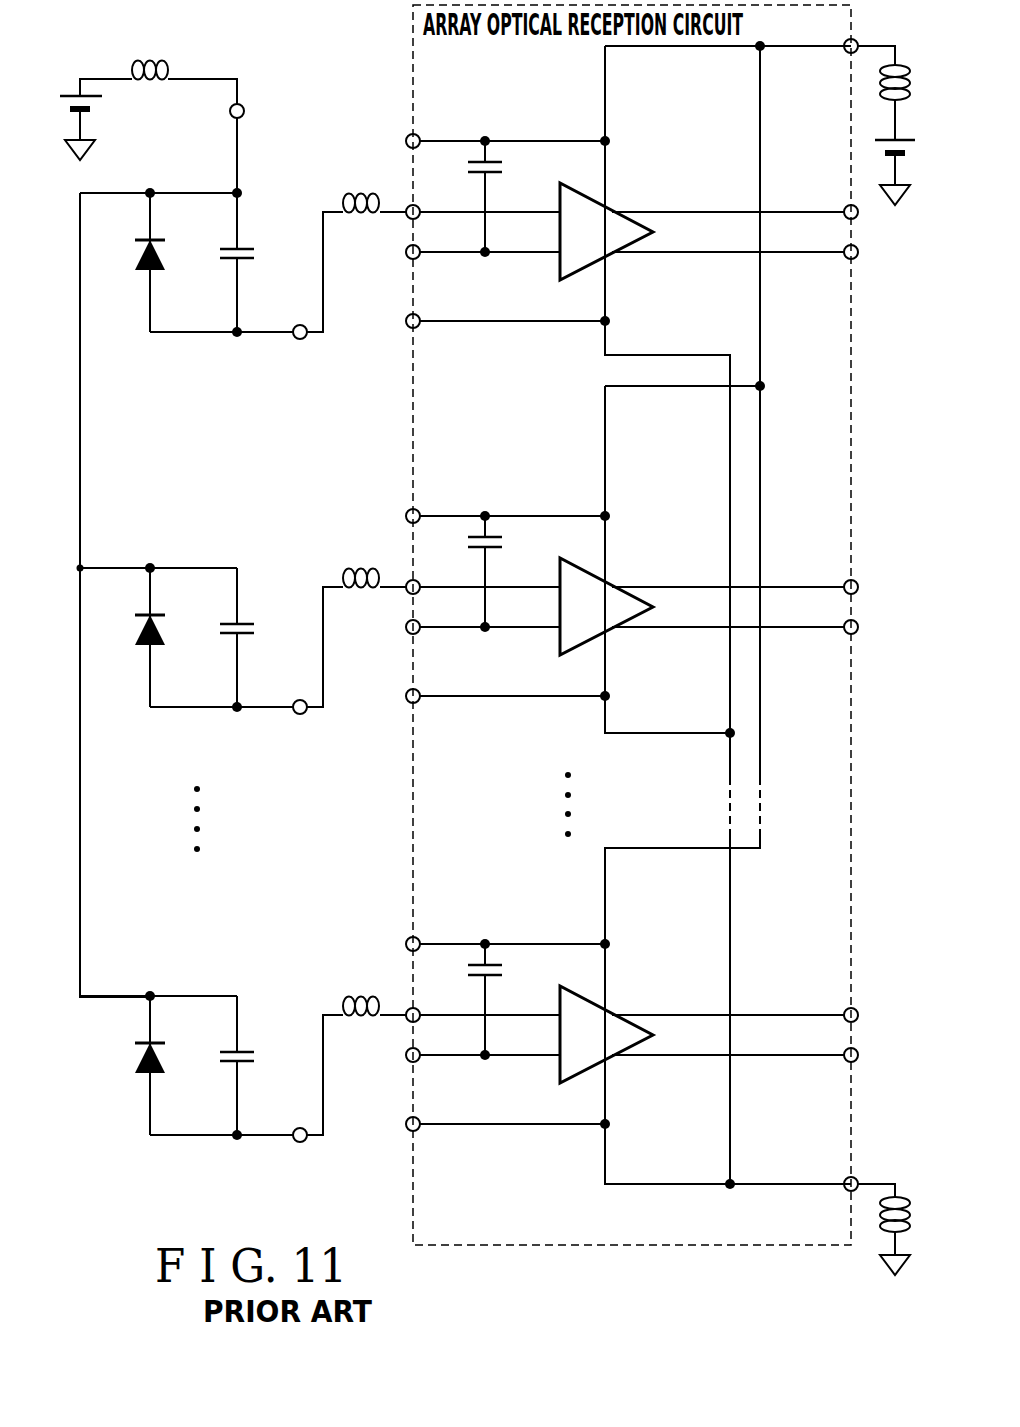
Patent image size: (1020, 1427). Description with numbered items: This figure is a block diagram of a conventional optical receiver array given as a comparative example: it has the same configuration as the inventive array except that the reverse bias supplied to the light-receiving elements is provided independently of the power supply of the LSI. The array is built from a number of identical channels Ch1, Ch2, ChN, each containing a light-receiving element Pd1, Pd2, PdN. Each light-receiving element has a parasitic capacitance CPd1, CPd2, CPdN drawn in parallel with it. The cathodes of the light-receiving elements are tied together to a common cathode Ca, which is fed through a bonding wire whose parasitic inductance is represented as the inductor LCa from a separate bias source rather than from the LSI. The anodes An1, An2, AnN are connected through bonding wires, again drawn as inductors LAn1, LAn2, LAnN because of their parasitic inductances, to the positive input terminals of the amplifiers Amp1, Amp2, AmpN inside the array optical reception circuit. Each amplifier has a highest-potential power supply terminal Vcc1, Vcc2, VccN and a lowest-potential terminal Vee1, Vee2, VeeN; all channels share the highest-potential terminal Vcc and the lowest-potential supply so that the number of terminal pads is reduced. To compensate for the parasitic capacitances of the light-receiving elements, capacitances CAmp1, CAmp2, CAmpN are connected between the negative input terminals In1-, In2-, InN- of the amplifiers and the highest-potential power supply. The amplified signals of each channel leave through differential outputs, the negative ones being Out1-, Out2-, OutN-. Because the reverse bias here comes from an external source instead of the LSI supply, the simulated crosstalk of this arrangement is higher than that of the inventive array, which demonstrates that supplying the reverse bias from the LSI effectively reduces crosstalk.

The channel Ch1 is at (193, 302).
The channel Ch2 is at (193, 679).
The channel ChN is at (193, 1108).
The light-receiving element Pd1 is at (164, 262).
The light-receiving element Pd2 is at (164, 637).
The light-receiving element PdN is at (164, 1065).
The parasitic capacitance CPd1 is at (261, 262).
The parasitic capacitance CPd2 is at (261, 637).
The parasitic capacitance CPdN is at (262, 1065).
The anode An1 is at (281, 318).
The anode An2 is at (281, 693).
The anode AnN is at (280, 1121).
The bonding wire inductance LAn1 is at (356, 263).
The bonding wire inductance LAn2 is at (356, 638).
The bonding wire inductance LAnN is at (356, 1066).
The cathode Ca is at (220, 136).
The bonding wire inductance LCa is at (150, 96).
The highest-potential power supply terminal Vcc is at (760, 107).
The highest-potential power supply terminal Vcc1 is at (508, 126).
The highest-potential power supply terminal Vcc2 is at (508, 501).
The highest-potential power supply terminal VccN is at (508, 929).
The capacitance CAmp1 is at (520, 197).
The capacitance CAmp2 is at (520, 572).
The capacitance CAmpN is at (521, 1000).
The negative input terminal In1- is at (483, 268).
The negative input terminal In2- is at (483, 643).
The negative input terminal InN- is at (483, 1071).
The lowest-potential power supply terminal Vee1 is at (508, 306).
The lowest-potential power supply terminal Vee2 is at (508, 681).
The lowest-potential power supply terminal VeeN is at (508, 1109).
The amplifier Amp1 is at (606, 231).
The amplifier Amp2 is at (606, 606).
The amplifier AmpN is at (606, 1034).
The negative output terminal Out1- is at (735, 267).
The negative output terminal Out2- is at (735, 642).
The negative output terminal OutN- is at (735, 1070).